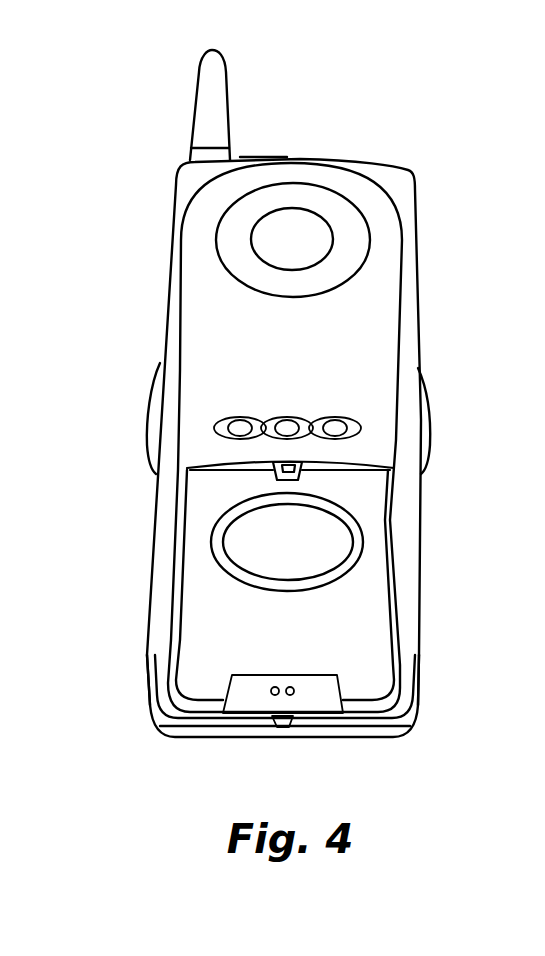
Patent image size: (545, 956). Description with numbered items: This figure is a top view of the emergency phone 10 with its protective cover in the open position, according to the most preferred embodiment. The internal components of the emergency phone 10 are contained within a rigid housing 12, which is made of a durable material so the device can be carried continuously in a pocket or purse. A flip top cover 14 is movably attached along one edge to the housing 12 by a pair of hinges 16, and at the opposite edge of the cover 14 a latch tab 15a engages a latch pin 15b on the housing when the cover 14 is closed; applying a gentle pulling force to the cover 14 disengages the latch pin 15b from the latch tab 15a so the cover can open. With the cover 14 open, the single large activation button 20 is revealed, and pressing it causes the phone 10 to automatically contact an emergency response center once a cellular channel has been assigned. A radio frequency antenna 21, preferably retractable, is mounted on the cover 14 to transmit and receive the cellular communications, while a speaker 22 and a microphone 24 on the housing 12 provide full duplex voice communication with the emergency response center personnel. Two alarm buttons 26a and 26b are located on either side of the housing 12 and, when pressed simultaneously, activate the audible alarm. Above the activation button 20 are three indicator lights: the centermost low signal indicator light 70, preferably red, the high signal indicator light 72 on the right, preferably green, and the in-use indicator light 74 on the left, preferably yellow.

The emergency communication apparatus 10 is at (305, 416).
The rigid housing 12 is at (163, 263).
The flip top cover 14 is at (217, 738).
The latch tab 15a is at (283, 723).
The latch pin 15b is at (390, 465).
The hinges 16 is at (145, 680).
The activation button 20 is at (353, 540).
The radio frequency antenna 21 is at (228, 110).
The speaker 22 is at (335, 245).
The microphone 24 is at (337, 677).
The alarm button 26a is at (145, 415).
The alarm button 26b is at (430, 412).
The low signal indicator light 70 is at (291, 420).
The high signal indicator light 72 is at (342, 421).
The in-use indicator light 74 is at (237, 421).